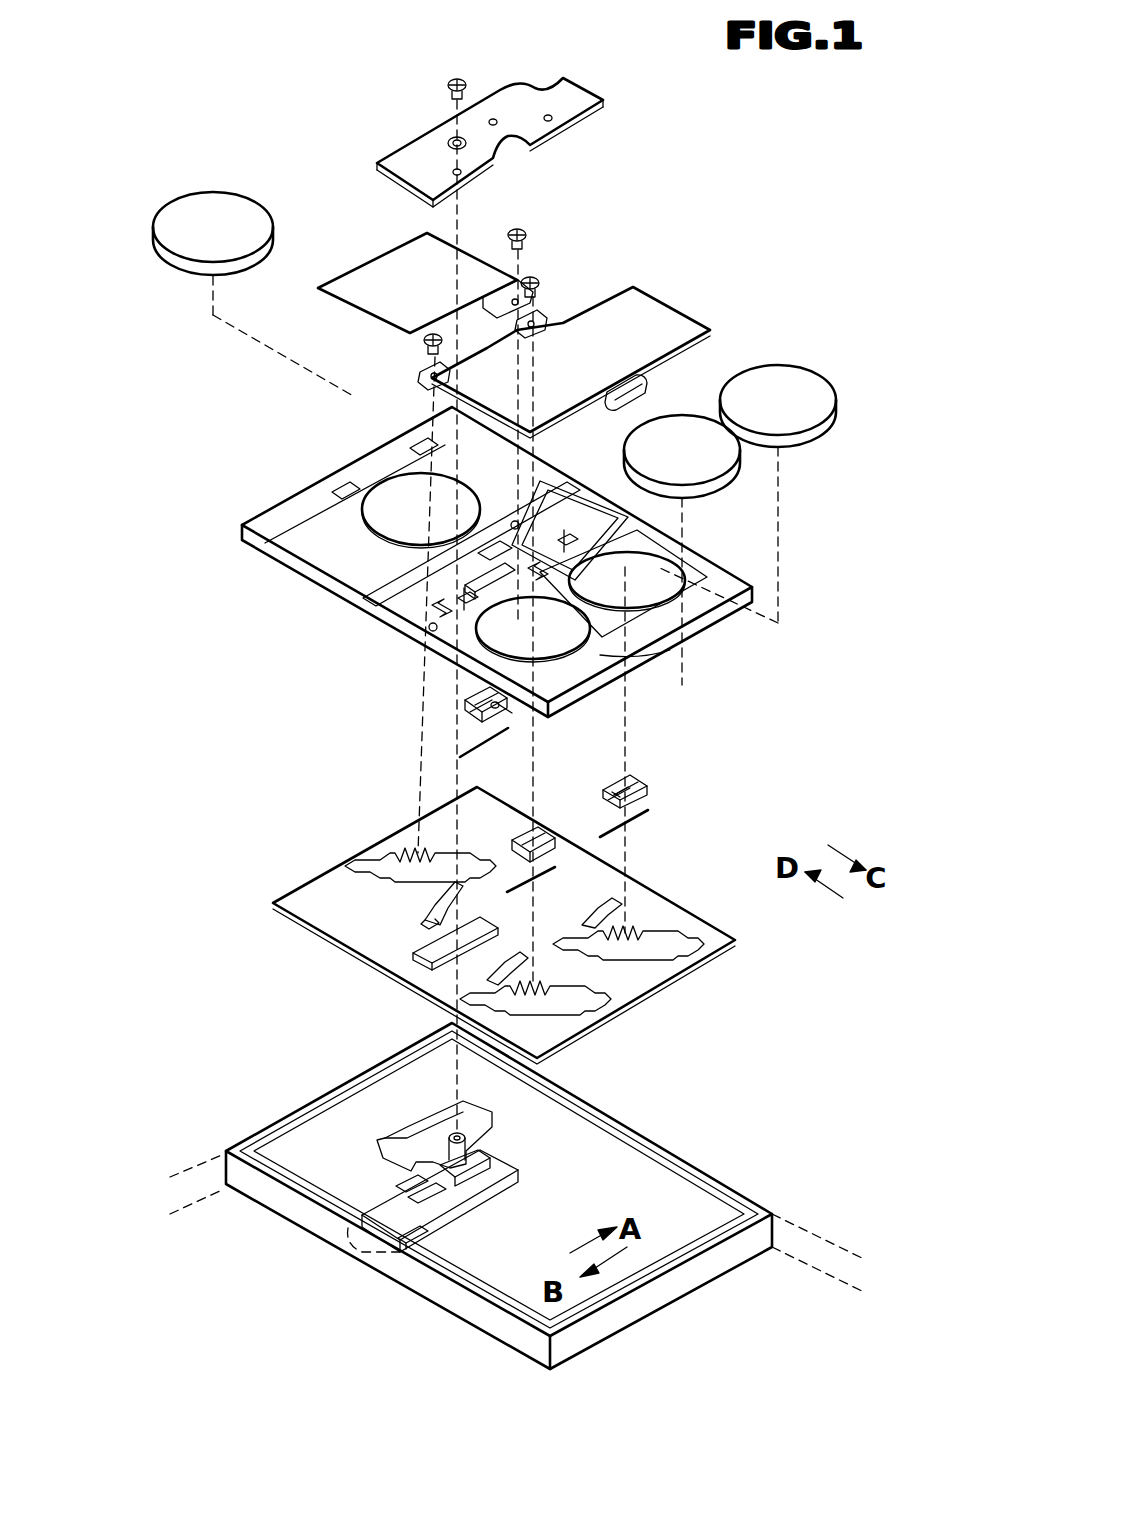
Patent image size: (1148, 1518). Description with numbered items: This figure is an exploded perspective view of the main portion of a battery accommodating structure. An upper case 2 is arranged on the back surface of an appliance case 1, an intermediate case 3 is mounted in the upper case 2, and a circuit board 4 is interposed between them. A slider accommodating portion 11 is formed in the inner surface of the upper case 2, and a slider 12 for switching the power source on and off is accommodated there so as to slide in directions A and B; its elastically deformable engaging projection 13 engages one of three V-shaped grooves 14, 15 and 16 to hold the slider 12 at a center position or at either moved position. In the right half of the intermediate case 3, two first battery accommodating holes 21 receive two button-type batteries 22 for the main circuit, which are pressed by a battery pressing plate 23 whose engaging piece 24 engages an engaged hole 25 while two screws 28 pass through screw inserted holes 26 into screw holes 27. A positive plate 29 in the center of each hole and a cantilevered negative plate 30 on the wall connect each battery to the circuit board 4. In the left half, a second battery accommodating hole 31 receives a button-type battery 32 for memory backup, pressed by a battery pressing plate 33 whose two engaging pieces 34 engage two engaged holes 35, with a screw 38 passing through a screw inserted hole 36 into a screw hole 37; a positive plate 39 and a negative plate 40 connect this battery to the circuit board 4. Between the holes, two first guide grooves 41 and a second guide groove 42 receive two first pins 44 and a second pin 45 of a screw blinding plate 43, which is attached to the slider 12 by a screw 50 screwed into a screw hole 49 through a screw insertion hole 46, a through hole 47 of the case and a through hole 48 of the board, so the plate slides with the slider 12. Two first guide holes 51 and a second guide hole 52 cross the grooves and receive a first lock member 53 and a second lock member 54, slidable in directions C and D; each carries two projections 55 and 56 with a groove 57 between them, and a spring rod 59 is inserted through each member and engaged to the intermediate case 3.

The appliance case 1 is at (818, 1250).
The upper case 2 is at (700, 1305).
The intermediate case 3 is at (242, 515).
The circuit board 4 is at (272, 900).
The slider accommodating portion 11 is at (482, 1178).
The slider 12 is at (440, 1175).
The engaging projection 13 is at (410, 1125).
The V-shaped groove 14 is at (415, 1230).
The V-shaped groove 15 is at (430, 1200).
The V-shaped groove 16 is at (428, 1184).
The first battery accommodating hole 21 is at (665, 600).
The button-type battery for the main circuit 22 is at (735, 445).
The battery pressing plate 23 is at (680, 315).
The engaging piece 24 is at (645, 385).
The engaged hole 25 is at (600, 640).
The screw inserted hole 26 is at (540, 320).
The screw hole 27 is at (542, 573).
The screw 28 is at (538, 280).
The positive plate 29 is at (580, 1015).
The negative plate 30 is at (612, 902).
The second battery accommodating hole 31 is at (375, 520).
The button-type battery for memory backup 32 is at (160, 245).
The battery pressing plate 33 is at (455, 262).
The engaging piece 34 is at (322, 285).
The engaged hole 35 is at (410, 450).
The screw inserted hole 36 is at (500, 315).
The screw hole 37 is at (567, 482).
The screw 38 is at (524, 230).
The positive plate 39 is at (365, 865).
The negative plate 40 is at (430, 920).
The first guide groove 41 is at (520, 520).
The second guide groove 42 is at (485, 550).
The screw blinding plate 43 is at (570, 93).
The first pin 44 is at (547, 114).
The second pin 45 is at (492, 118).
The screw insertion hole 46 is at (450, 140).
The through hole 47 is at (438, 573).
The through hole 48 is at (430, 960).
The screw hole 49 is at (466, 1138).
The screw 50 is at (450, 82).
The first guide hole 51 is at (566, 540).
The second guide hole 52 is at (470, 580).
The first lock member 53 is at (540, 838).
The second lock member 54 is at (465, 700).
The projection 55 is at (500, 712).
The projection 56 is at (478, 708).
The groove 57 is at (478, 714).
The spring rod 59 is at (545, 875).